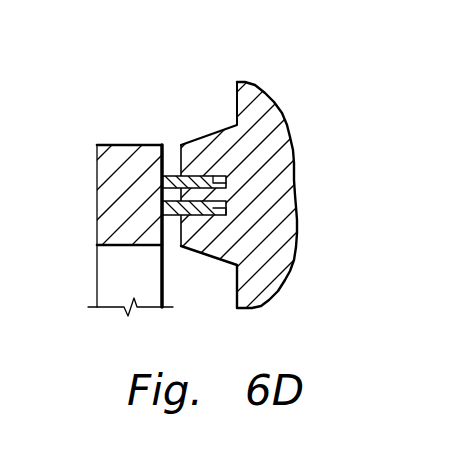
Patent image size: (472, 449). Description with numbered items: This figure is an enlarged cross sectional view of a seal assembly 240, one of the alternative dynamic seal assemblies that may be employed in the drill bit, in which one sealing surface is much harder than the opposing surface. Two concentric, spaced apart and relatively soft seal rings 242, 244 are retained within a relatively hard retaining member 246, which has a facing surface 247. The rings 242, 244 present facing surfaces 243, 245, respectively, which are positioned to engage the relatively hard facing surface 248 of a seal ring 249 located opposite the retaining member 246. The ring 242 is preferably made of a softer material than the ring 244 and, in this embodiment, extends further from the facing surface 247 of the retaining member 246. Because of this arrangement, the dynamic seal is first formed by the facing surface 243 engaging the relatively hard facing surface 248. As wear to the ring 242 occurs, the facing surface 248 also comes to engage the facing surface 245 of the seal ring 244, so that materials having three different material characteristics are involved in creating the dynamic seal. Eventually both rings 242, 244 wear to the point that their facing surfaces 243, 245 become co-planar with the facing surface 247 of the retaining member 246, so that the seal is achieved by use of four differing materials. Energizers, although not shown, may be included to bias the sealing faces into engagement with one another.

The seal assembly 240 is at (203, 73).
The seal ring 242 is at (221, 210).
The facing surface 243 is at (163, 207).
The seal ring 244 is at (217, 182).
The facing surface 245 is at (163, 177).
The retaining member 246 is at (280, 240).
The facing surface 247 is at (186, 162).
The facing surface 248 is at (186, 162).
The seal ring 249 is at (112, 152).